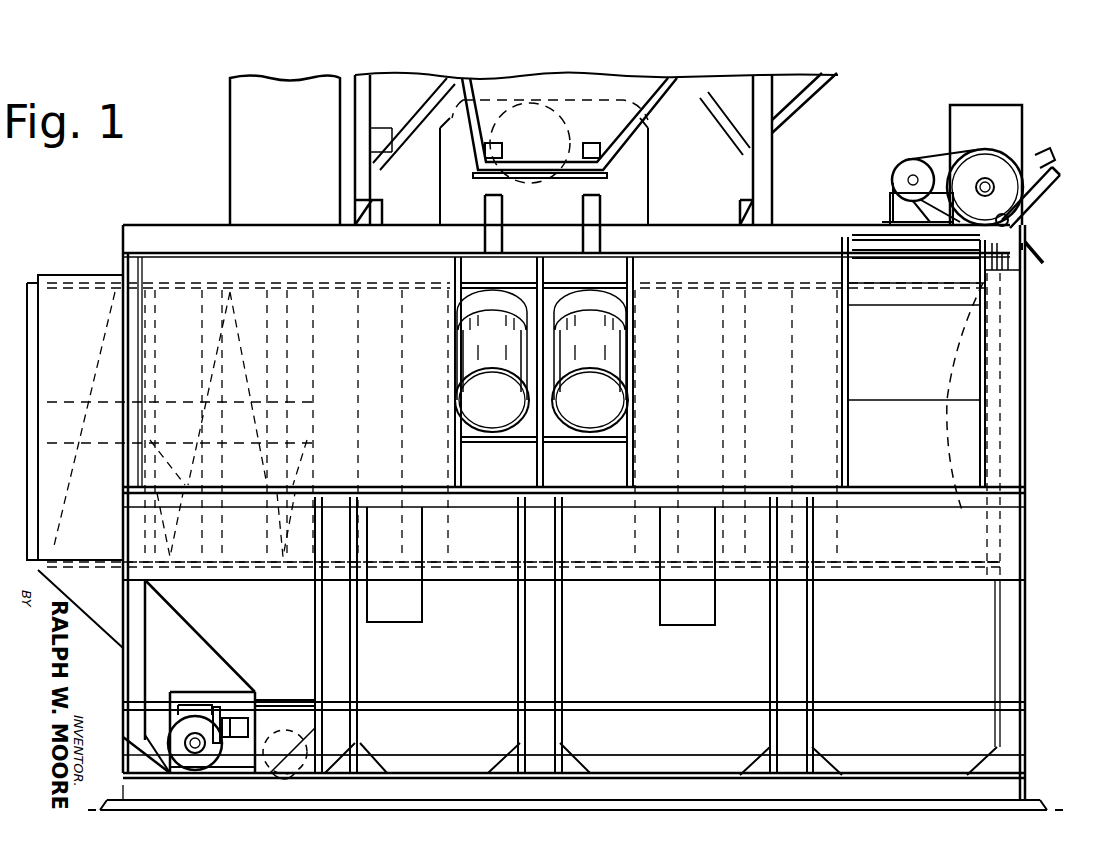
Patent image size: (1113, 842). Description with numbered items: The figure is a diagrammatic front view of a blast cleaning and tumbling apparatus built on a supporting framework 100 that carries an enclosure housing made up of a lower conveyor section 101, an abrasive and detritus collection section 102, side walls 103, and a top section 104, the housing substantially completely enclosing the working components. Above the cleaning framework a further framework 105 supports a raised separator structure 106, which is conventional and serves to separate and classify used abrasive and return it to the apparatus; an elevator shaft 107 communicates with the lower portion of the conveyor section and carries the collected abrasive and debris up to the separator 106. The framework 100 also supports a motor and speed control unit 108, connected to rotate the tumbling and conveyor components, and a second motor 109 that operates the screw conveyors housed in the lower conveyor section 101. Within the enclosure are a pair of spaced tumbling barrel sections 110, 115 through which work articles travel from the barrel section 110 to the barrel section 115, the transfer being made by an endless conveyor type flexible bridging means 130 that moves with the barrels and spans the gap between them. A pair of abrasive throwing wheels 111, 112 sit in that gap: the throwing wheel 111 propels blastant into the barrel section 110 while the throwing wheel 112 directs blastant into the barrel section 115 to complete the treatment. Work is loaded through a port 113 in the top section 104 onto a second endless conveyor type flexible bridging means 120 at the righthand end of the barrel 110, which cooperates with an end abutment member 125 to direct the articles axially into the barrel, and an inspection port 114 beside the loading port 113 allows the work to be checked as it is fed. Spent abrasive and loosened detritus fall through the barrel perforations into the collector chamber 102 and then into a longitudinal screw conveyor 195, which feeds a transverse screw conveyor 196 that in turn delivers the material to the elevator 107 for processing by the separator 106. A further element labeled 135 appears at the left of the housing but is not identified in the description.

The supporting framework 100 is at (1012, 668).
The lower conveyor section 101 is at (972, 738).
The abrasive and detritus collection section 102 is at (965, 648).
The side walls 103 is at (1012, 570).
The top section 104 is at (183, 225).
The further framework 105 is at (765, 170).
The separator structure 106 is at (522, 86).
The elevator shaft 107 is at (298, 127).
The motor and speed control unit 108 is at (989, 113).
The second motor 109 is at (190, 705).
The tumbling barrel section 110 is at (660, 285).
The abrasive throwing wheel 111 is at (604, 416).
The abrasive throwing wheel 112 is at (508, 416).
The loading port 113 is at (928, 260).
The inspection port 114 is at (860, 235).
The tumbling barrel section 115 is at (200, 283).
The second endless conveyor type flexible bridging means 120 is at (882, 565).
The end abutment member 125 is at (948, 425).
The endless conveyor type flexible bridging means 130 is at (476, 563).
The side housing 135 is at (65, 400).
The longitudinal screw conveyor 195 is at (248, 718).
The transverse screw conveyor 196 is at (300, 735).